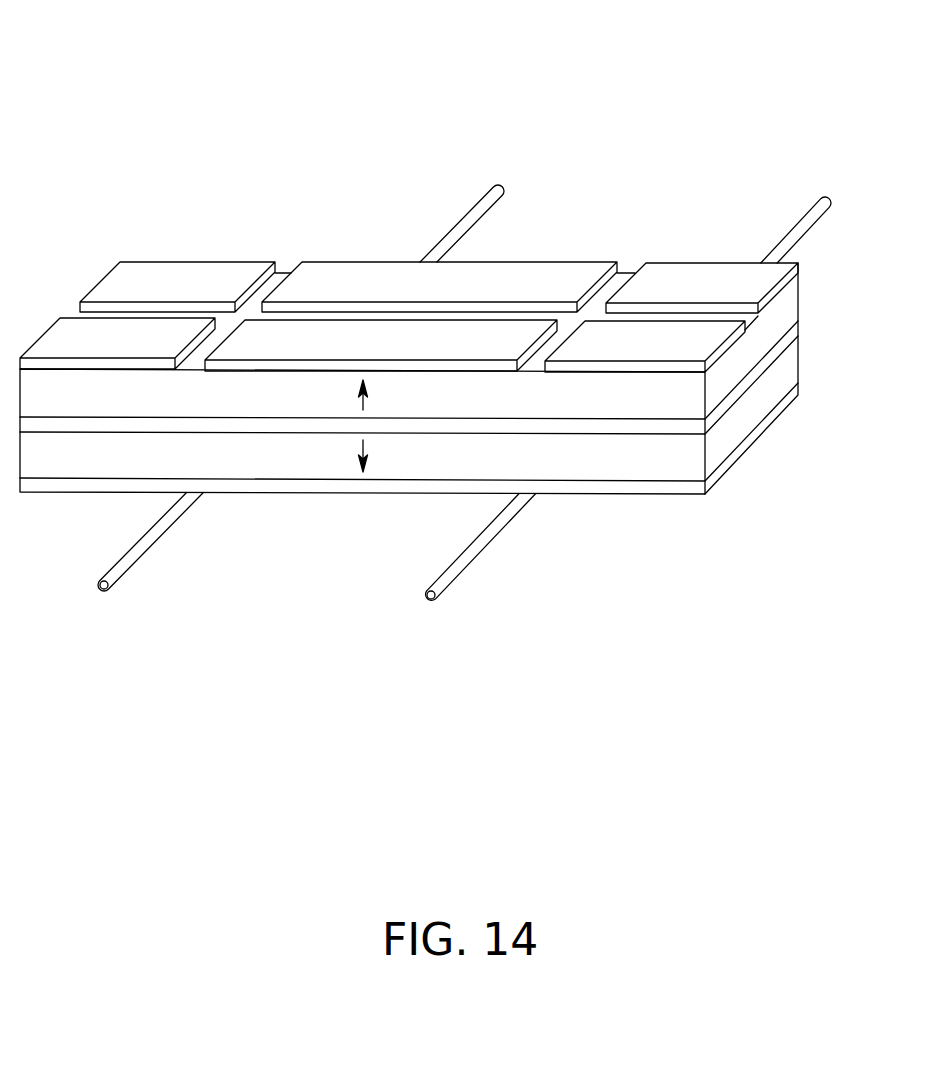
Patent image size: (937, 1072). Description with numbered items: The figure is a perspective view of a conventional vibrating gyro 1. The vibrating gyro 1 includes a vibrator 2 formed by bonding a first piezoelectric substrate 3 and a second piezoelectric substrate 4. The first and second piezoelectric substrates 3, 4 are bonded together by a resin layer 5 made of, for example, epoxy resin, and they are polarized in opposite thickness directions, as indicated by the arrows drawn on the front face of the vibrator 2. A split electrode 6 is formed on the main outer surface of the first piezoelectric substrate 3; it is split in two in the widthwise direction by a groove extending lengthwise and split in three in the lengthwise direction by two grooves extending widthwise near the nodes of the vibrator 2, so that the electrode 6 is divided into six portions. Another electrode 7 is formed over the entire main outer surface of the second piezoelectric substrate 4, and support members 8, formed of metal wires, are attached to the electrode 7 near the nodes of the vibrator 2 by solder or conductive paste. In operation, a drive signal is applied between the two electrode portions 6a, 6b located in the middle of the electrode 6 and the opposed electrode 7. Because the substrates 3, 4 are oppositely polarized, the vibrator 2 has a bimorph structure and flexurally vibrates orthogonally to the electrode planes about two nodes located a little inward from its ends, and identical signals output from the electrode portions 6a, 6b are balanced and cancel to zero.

The vibrating gyro 1 is at (200, 131).
The vibrator 2 is at (714, 507).
The first piezoelectric substrate 3 is at (785, 316).
The second piezoelectric substrate 4 is at (783, 380).
The resin layer 5 is at (793, 342).
The split electrode 6 is at (565, 254).
The electrode portion 6a is at (320, 267).
The electrode portion 6b is at (363, 330).
The electrode 7 is at (617, 487).
The support member 8 is at (128, 554).